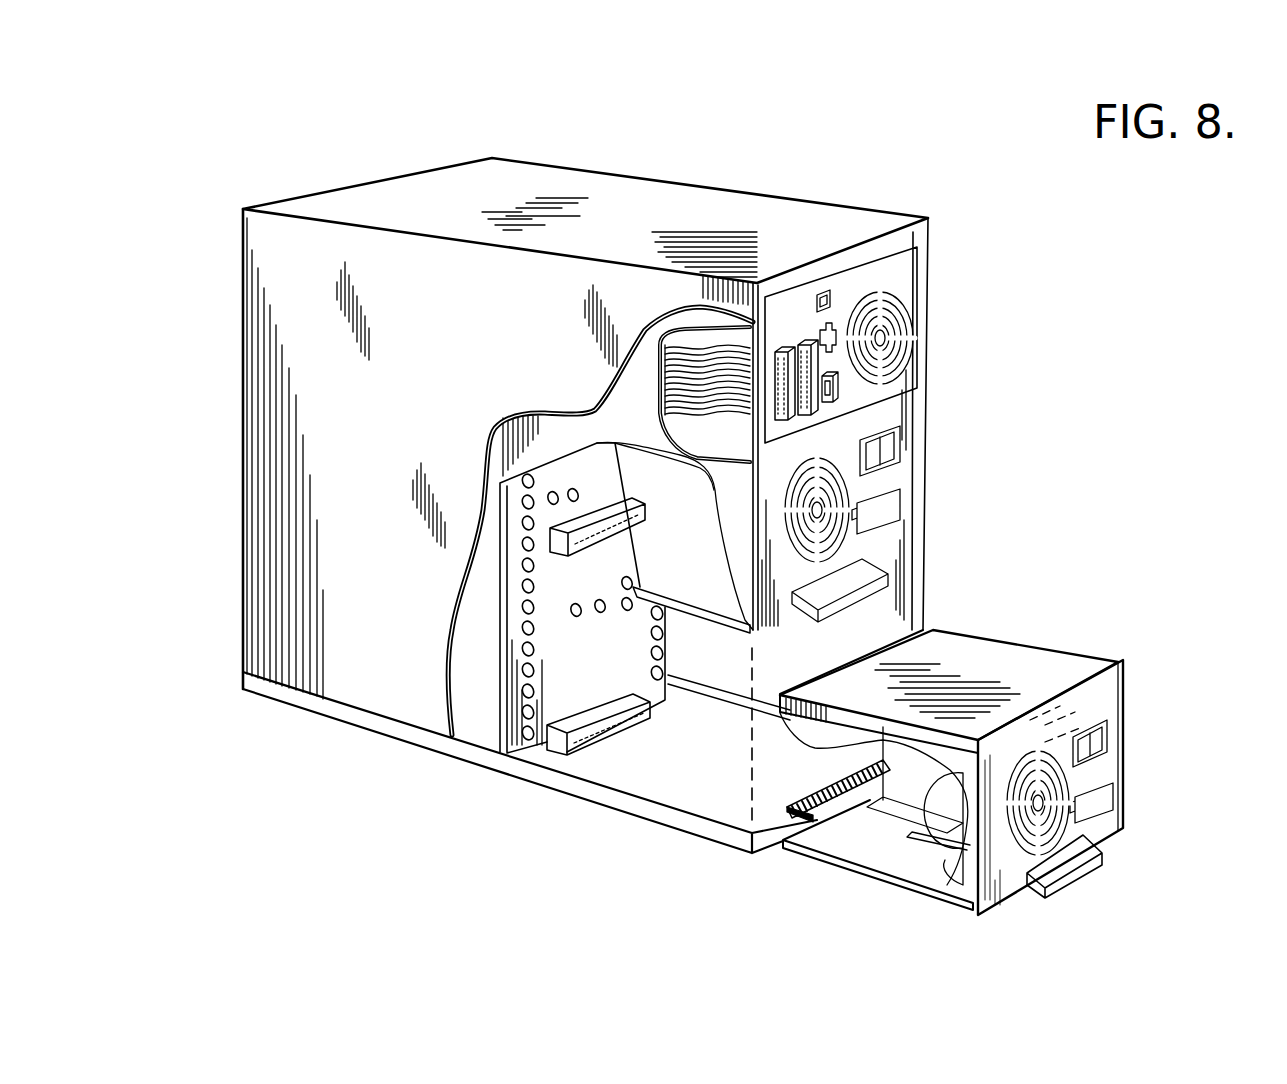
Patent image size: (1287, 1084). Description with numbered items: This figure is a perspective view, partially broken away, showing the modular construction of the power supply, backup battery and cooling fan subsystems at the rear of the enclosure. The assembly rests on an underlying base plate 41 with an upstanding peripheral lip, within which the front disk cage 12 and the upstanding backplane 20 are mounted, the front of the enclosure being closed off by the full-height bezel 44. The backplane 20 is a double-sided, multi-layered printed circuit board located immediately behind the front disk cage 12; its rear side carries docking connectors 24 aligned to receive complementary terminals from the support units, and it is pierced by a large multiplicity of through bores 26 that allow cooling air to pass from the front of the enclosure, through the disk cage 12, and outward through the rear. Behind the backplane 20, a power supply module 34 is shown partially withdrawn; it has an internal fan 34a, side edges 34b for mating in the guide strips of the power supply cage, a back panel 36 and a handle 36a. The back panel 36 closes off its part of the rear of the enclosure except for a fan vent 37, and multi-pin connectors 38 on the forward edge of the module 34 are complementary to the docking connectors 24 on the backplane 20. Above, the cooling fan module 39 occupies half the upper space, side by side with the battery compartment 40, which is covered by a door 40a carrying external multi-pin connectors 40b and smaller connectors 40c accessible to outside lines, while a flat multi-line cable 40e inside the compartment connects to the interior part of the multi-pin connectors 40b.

The front disk cage 12 is at (473, 678).
The backplane 20 is at (513, 728).
The docking connectors 24 is at (560, 753).
The through bores 26 is at (527, 663).
The power supply module 34 is at (1010, 667).
The internal fan 34a is at (948, 815).
The side edges 34b is at (962, 893).
The back panel 36 is at (1110, 692).
The handle 36a is at (1093, 858).
The fan vent 37 is at (1015, 857).
The multi-pin terminals or connectors 38 is at (807, 793).
The cooling fan module 39 is at (903, 262).
The battery compartment 40 is at (733, 333).
The door 40a is at (803, 296).
The external multi-pin connectors 40b is at (808, 343).
The smaller connectors 40c is at (838, 396).
The flat multi-line cable 40e is at (673, 350).
The base plate 41 is at (690, 815).
The bezel 44 is at (250, 528).